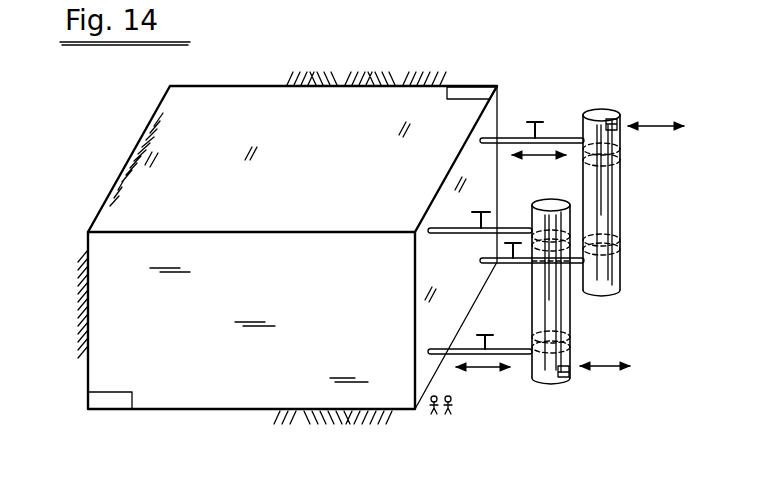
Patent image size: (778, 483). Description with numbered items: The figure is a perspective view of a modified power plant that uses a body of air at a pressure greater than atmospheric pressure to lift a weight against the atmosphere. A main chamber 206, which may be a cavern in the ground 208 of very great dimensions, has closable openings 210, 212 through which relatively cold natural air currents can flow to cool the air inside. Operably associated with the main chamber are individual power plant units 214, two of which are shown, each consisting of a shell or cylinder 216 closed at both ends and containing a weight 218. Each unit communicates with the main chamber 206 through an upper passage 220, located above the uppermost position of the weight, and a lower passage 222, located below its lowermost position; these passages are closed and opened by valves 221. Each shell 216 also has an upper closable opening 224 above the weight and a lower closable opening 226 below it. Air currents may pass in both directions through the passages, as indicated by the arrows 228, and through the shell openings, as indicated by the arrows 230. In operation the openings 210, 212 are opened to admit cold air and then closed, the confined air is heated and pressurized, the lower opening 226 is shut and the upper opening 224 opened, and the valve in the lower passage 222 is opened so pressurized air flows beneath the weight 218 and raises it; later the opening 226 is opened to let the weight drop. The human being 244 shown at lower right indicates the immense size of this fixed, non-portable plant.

The main chamber 206 is at (108, 326).
The cavern in the ground 208 is at (122, 158).
The closable opening 210 is at (475, 90).
The closable opening 212 is at (114, 404).
The power plant unit 214 is at (588, 104).
The shell or cylinder 216 is at (568, 318).
The weight 218 is at (618, 178).
The upper passage 220 is at (488, 138).
The valve 221 is at (536, 122).
The lower passage 222 is at (484, 268).
The upper closable opening 224 is at (603, 112).
The lower closable opening 226 is at (553, 380).
The arrows 228 is at (540, 158).
The arrows 230 is at (618, 366).
The human being 244 is at (437, 421).